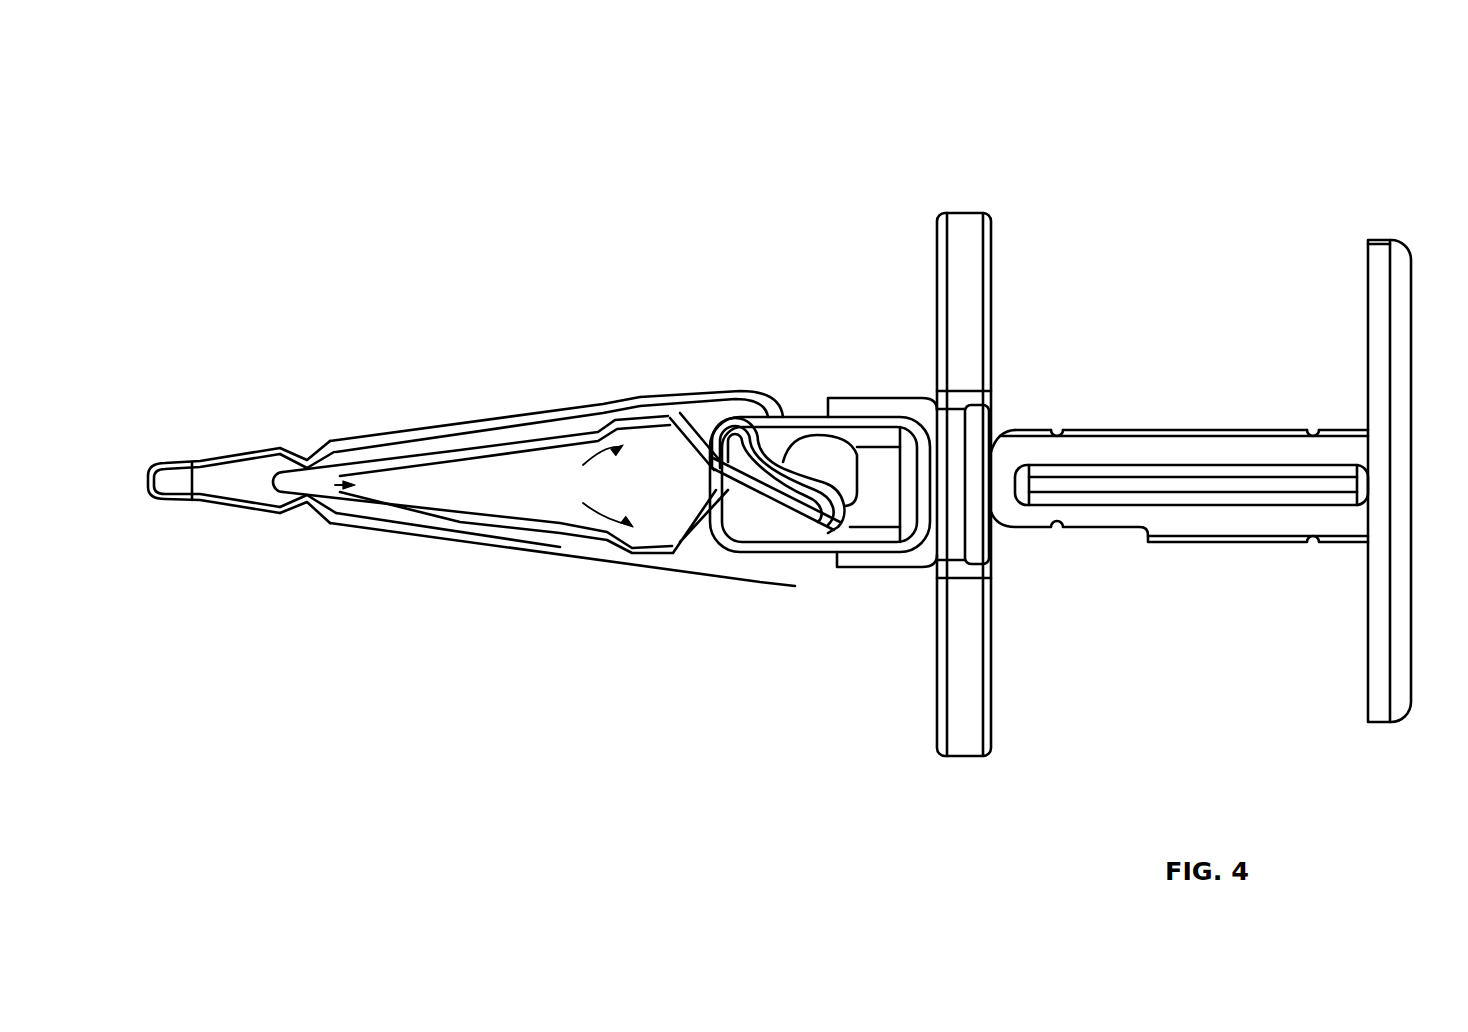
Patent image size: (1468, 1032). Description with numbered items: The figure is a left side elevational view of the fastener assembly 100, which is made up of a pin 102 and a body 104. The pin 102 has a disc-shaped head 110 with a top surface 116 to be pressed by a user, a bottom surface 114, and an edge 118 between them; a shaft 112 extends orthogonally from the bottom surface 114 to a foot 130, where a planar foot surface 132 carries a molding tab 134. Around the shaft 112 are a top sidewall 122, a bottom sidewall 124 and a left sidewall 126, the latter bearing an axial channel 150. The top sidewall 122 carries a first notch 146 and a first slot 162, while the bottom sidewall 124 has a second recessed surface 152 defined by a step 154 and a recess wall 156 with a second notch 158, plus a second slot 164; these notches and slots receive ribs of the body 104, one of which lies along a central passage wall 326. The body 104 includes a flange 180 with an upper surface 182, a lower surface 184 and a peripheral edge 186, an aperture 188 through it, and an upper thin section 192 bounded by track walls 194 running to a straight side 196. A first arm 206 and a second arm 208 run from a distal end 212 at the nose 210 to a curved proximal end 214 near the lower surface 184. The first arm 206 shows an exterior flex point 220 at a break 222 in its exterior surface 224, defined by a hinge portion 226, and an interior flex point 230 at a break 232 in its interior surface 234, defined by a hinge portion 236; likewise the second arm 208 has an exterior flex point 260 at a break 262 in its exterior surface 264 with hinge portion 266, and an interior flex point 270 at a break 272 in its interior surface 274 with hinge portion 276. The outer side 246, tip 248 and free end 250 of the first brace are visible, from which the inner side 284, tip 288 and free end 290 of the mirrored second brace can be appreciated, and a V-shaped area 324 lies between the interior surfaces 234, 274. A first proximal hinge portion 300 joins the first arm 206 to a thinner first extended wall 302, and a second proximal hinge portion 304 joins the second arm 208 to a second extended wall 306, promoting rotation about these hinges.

The fastener assembly 100 is at (198, 105).
The pin 102 is at (1412, 302).
The body 104 is at (146, 477).
The head 110 is at (1412, 330).
The shaft 112 is at (1300, 542).
The bottom surface 114 is at (1370, 285).
The top surface 116 is at (1412, 480).
The edge 118 is at (1375, 243).
The top sidewall 122 is at (1254, 428).
The bottom sidewall 124 is at (1220, 545).
The left sidewall 126 is at (1253, 512).
The foot 130 is at (1015, 432).
The foot surface 132 is at (980, 565).
The molding tab 134 is at (1005, 438).
The first notch 146 is at (1060, 430).
The axial channel 150 is at (1280, 498).
The second recessed surface 152 is at (1070, 533).
The step 154 is at (1144, 545).
The recess wall 156 is at (1038, 528).
The second notch 158 is at (1057, 538).
The first slot 162 is at (1313, 428).
The second slot 164 is at (1318, 540).
The flange 180 is at (968, 758).
The upper surface 182 is at (993, 222).
The lower surface 184 is at (933, 220).
The peripheral edge 186 is at (957, 225).
The aperture 188 is at (998, 462).
The upper thin section 192 is at (1030, 490).
The track walls 194 is at (983, 405).
The straight side 196 is at (938, 590).
The first arm 206 is at (395, 440).
The second arm 208 is at (470, 545).
The nose 210 is at (147, 466).
The distal end 212 is at (223, 468).
The proximal end 214 is at (732, 404).
The exterior flex point 220 is at (278, 446).
The break 222 is at (331, 430).
The exterior surface 224 is at (633, 419).
The hinge portion 226 is at (305, 452).
The interior flex point 230 is at (668, 411).
The break 232 is at (608, 405).
The interior surface 234 is at (515, 440).
The hinge portion 236 is at (657, 424).
The outer side 246 is at (790, 565).
The tip 248 is at (836, 547).
The free end 250 is at (818, 556).
The exterior flex point 260 is at (279, 514).
The break 262 is at (318, 535).
The exterior surface 264 is at (406, 535).
The hinge portion 266 is at (306, 515).
The interior flex point 270 is at (655, 553).
The break 272 is at (578, 532).
The interior surface 274 is at (430, 510).
The hinge portion 276 is at (640, 563).
The inner side 284 is at (812, 445).
The tip 288 is at (830, 450).
The free end 290 is at (818, 463).
The first proximal hinge portion 300 is at (790, 462).
The first extended wall 302 is at (800, 455).
The second proximal hinge portion 304 is at (805, 562).
The second extended wall 306 is at (800, 567).
The V-shaped area 324 is at (228, 492).
The central passage wall 326 is at (920, 392).